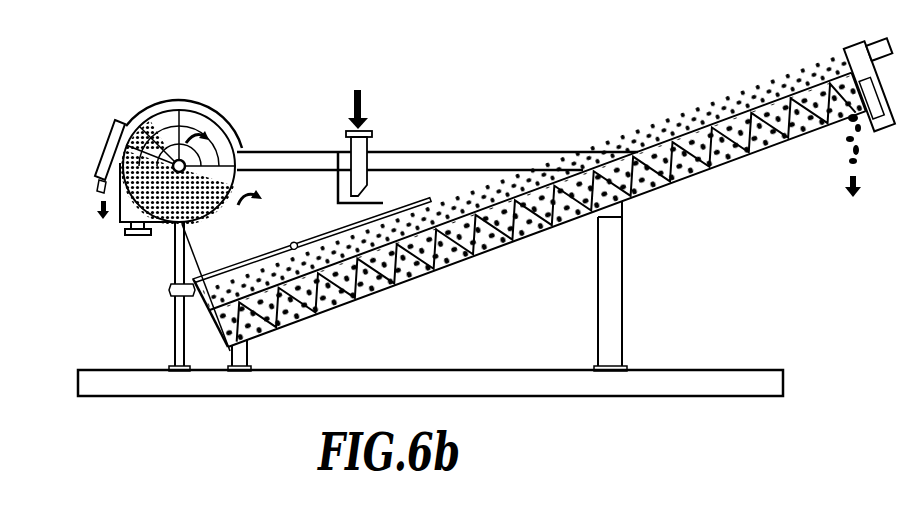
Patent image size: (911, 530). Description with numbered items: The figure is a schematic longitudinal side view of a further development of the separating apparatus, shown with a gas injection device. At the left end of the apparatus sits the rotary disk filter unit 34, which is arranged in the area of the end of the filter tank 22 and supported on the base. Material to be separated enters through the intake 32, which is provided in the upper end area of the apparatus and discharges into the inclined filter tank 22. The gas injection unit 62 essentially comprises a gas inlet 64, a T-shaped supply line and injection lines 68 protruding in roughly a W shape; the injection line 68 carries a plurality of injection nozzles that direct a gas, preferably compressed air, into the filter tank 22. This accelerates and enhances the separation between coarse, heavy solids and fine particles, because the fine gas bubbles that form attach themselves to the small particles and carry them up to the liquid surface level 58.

The rotary disk filter unit 34 is at (136, 99).
The gas injection unit 62 is at (270, 233).
The intake 32 is at (368, 145).
The injection line 68 is at (408, 200).
The filter tank 22 is at (497, 190).
The liquid surface level 58 is at (543, 169).
The gas inlet 64 is at (190, 283).